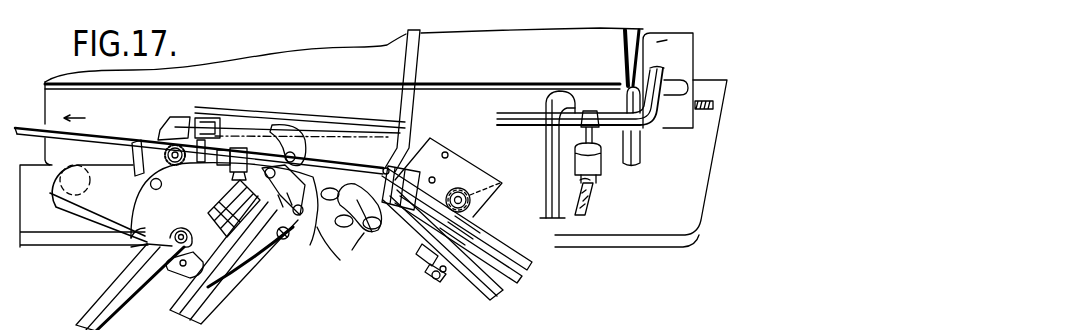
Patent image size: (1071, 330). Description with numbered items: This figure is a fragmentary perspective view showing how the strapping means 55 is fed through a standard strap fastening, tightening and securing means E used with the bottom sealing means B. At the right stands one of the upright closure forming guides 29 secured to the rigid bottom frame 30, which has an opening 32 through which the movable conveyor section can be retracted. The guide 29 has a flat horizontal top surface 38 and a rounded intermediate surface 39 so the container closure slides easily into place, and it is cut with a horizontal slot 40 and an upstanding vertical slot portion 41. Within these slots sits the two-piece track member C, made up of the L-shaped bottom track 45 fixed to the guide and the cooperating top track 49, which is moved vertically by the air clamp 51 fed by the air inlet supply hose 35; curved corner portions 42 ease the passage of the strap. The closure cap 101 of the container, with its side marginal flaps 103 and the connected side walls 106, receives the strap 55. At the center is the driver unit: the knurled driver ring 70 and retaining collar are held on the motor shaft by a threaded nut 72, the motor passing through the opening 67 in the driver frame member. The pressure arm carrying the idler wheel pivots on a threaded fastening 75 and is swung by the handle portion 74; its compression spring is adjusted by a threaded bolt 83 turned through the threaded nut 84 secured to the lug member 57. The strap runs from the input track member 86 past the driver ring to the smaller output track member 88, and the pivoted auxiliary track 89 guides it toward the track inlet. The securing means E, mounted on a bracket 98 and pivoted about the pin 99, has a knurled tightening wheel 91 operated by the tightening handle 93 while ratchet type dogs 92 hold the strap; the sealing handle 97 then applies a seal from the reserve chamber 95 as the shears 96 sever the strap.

The closure forming guide 29 is at (545, 160).
The bottom frame 30 is at (692, 216).
The opening 32 is at (642, 164).
The air inlet supply hose 35 is at (718, 105).
The flat horizontal top surface 38 is at (546, 99).
The rounded intermediate surface 39 is at (635, 43).
The horizontal slot 40 is at (688, 84).
The vertical upstanding slot portion 41 is at (657, 80).
The curved corner portion 42 is at (658, 132).
The L-shaped bottom track 45 is at (700, 122).
The top track 49 is at (614, 118).
The air clamp 51 is at (598, 185).
The strapping means 55 is at (34, 126).
The lug member 57 is at (441, 278).
The opening in driver frame member 67 is at (472, 200).
The knurled driver ring 70 is at (502, 183).
The threaded nut 72 is at (448, 177).
The handle portion 74 is at (497, 292).
The threaded fastening 75 is at (405, 240).
The threaded bolt 83 is at (432, 282).
The threaded nut 84 is at (432, 262).
The input track member 86 is at (418, 172).
The output track member 88 is at (485, 233).
The auxiliary track 89 is at (420, 50).
The knurled tightening wheel 91 is at (170, 145).
The ratchet type dogs 92 is at (294, 150).
The tightening handle 93 is at (358, 250).
The reserve chamber 95 is at (200, 311).
The shears 96 is at (235, 160).
The sealing handle 97 is at (92, 307).
The bracket 98 is at (70, 210).
The pin 99 is at (88, 178).
The closure cap 101 is at (720, 112).
The side marginal flap 103 is at (603, 165).
The side wall 106 is at (618, 329).
The bottom sealing means B is at (723, 168).
The two-piece track member C is at (690, 75).
The strap fastening, tightening and securing means E is at (130, 247).